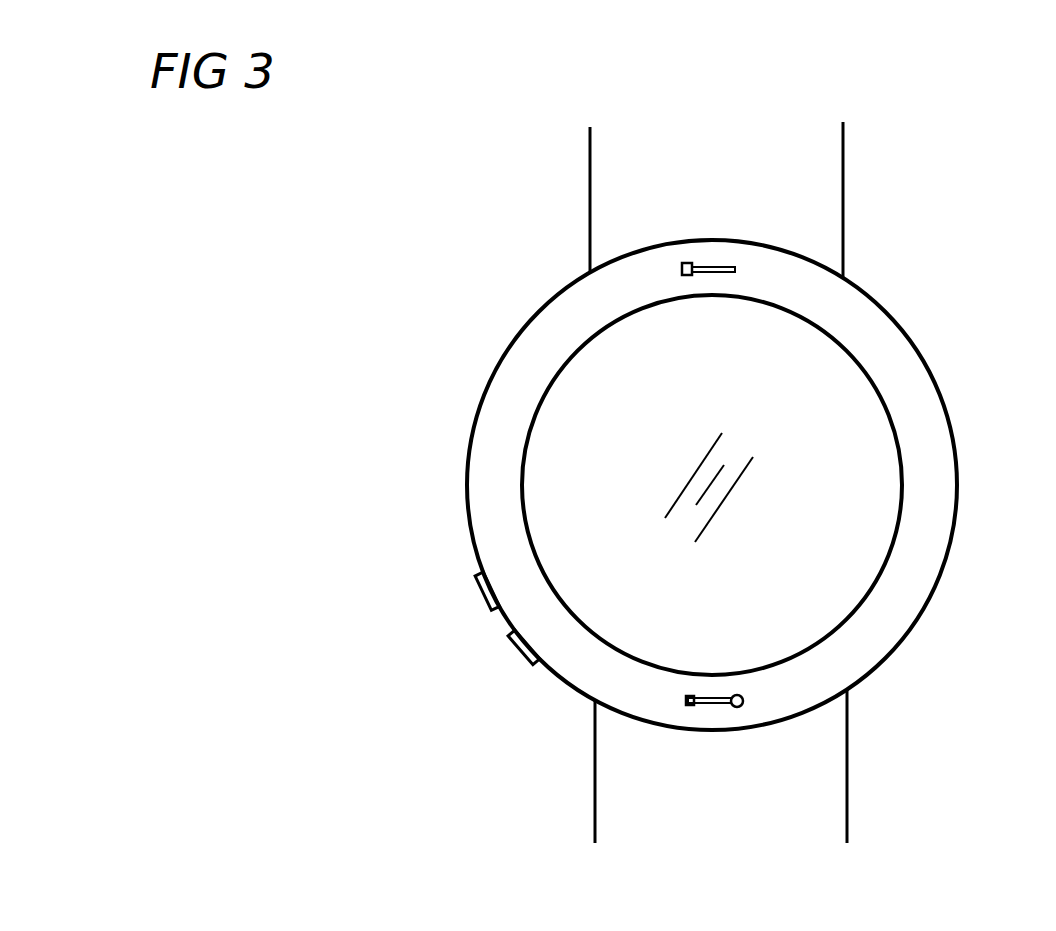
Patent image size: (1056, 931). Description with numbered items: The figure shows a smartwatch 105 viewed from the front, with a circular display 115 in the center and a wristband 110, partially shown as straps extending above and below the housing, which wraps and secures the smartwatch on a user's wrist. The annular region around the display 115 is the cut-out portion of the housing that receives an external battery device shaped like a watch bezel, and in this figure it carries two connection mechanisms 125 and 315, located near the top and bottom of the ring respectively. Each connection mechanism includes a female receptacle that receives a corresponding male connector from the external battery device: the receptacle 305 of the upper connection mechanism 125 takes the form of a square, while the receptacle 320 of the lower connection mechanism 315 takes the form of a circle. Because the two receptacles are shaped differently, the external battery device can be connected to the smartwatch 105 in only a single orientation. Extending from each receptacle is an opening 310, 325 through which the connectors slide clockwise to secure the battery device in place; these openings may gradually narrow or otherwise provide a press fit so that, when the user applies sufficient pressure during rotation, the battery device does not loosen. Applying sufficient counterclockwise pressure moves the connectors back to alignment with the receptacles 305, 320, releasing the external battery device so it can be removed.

The smartwatch 105 is at (947, 415).
The wristband 110 is at (849, 792).
The display 115 is at (543, 433).
The connection mechanism 125 is at (707, 259).
The female receptacle 305 is at (682, 266).
The opening 310 is at (735, 270).
The connection mechanism 315 is at (715, 712).
The female receptacle 320 is at (743, 698).
The opening 325 is at (688, 702).